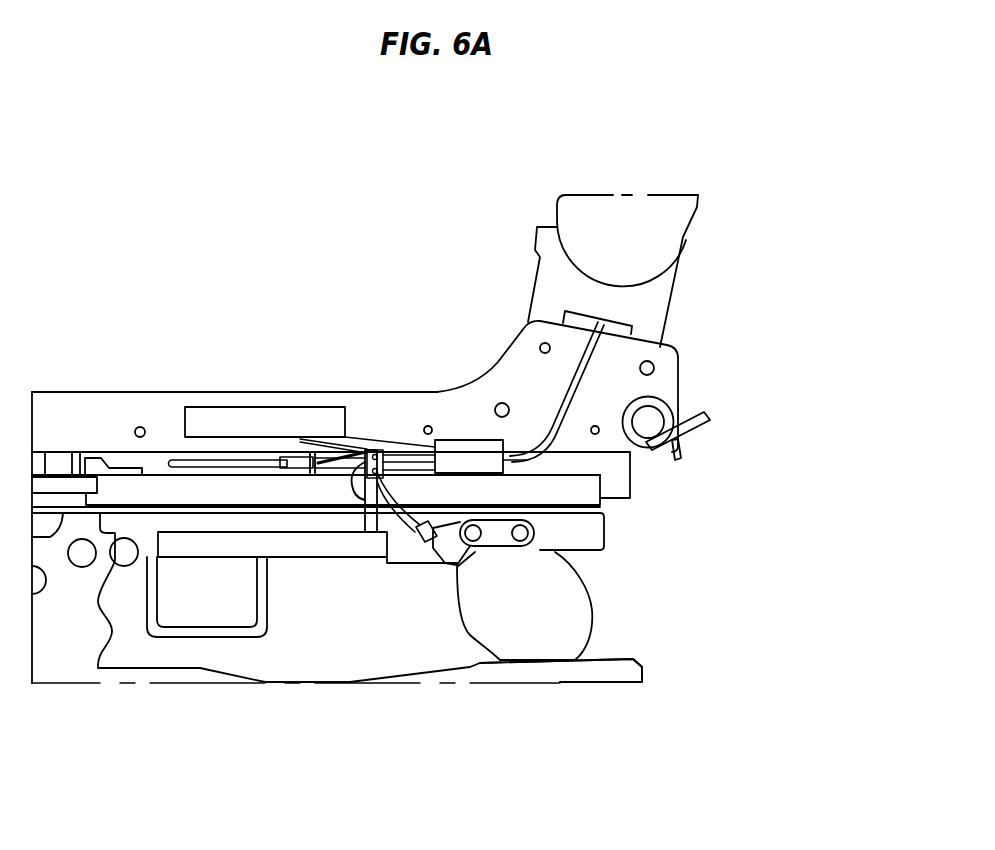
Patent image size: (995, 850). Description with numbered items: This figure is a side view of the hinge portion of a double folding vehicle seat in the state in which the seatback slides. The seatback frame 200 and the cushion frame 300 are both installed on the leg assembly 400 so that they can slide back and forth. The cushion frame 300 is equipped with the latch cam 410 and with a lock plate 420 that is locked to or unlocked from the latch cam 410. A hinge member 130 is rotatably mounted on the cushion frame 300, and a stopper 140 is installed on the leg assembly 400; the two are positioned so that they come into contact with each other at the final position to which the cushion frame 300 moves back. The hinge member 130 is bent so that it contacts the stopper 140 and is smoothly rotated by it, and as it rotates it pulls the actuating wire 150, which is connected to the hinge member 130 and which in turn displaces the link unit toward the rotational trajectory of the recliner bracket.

The hinge member 130 is at (378, 455).
The stopper 140 is at (362, 527).
The actuating wire 150 is at (238, 467).
The seatback frame 200 is at (648, 312).
The cushion frame 300 is at (193, 407).
The leg assembly 400 is at (622, 706).
The latch cam 410 is at (490, 522).
The lock plate 420 is at (503, 582).